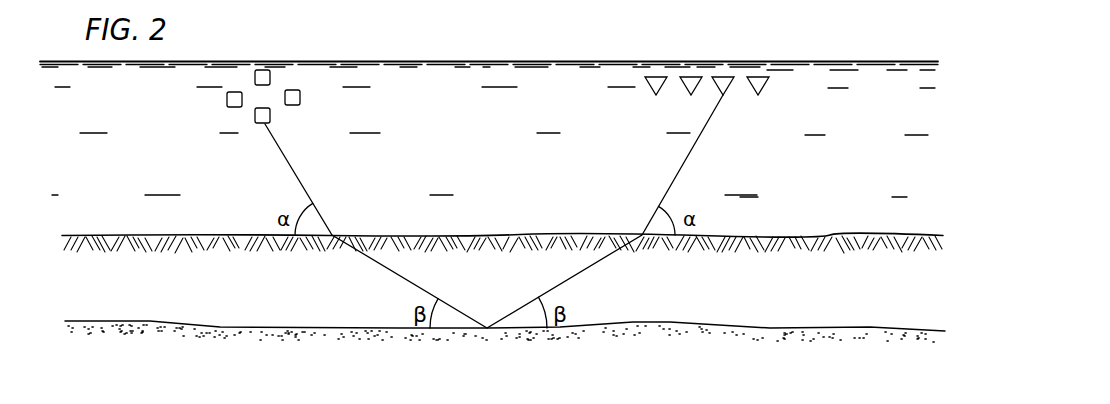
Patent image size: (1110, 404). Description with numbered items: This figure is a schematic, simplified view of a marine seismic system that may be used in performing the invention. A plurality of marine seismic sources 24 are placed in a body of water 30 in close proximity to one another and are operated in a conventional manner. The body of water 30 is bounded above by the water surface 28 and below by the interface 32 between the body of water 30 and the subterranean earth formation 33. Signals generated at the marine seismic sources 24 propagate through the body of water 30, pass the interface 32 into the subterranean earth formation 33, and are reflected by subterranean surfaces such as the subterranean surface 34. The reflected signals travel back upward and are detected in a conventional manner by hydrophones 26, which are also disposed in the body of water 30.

The marine seismic sources 24 is at (216, 98).
The hydrophones 26 is at (773, 90).
The water surface 28 is at (371, 60).
The body of water 30 is at (498, 126).
The interface 32 is at (518, 235).
The subterranean earth formation 33 is at (260, 286).
The subterranean surface 34 is at (670, 323).